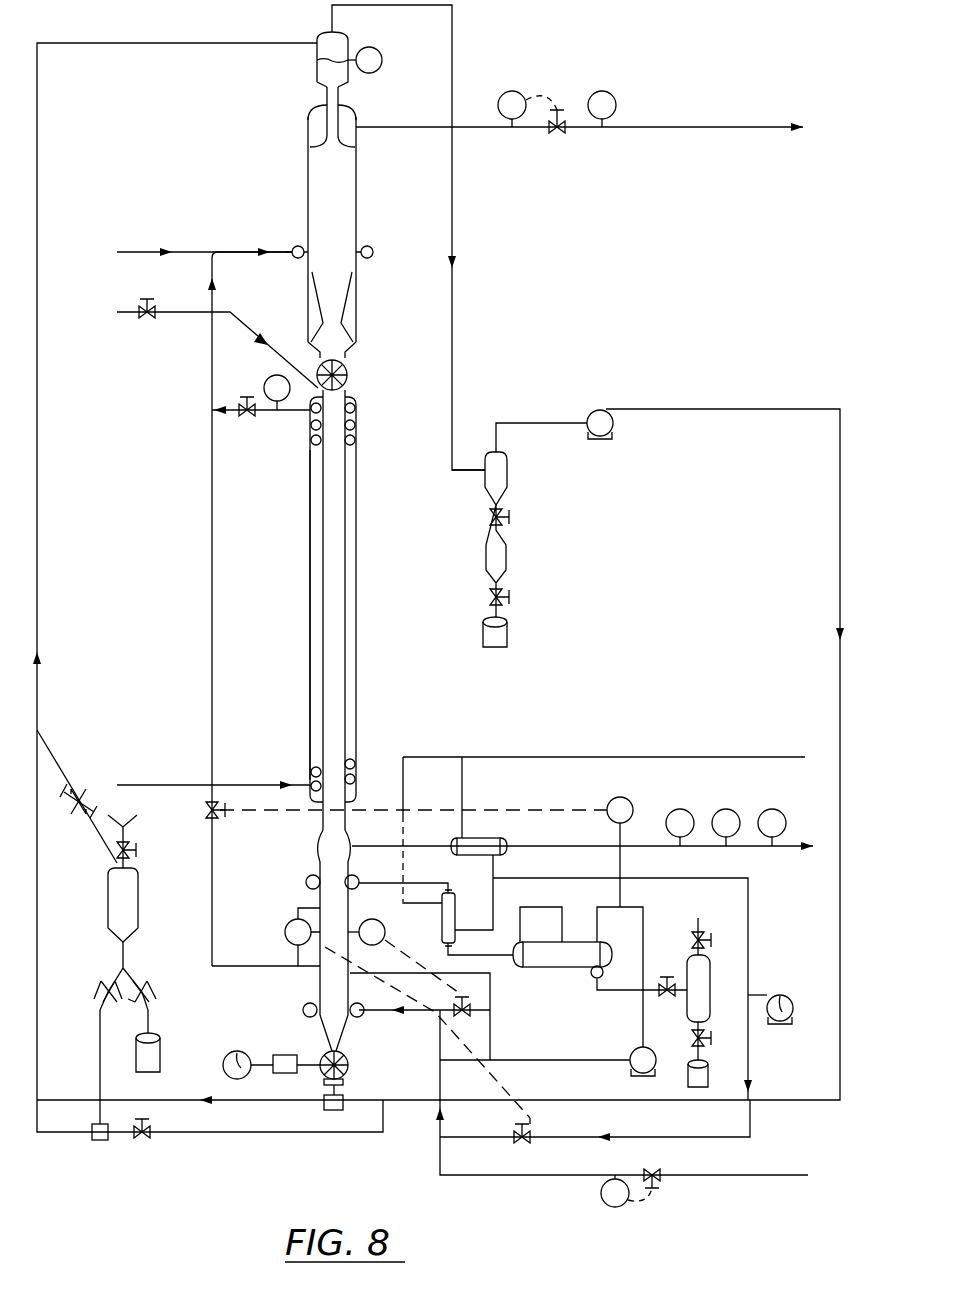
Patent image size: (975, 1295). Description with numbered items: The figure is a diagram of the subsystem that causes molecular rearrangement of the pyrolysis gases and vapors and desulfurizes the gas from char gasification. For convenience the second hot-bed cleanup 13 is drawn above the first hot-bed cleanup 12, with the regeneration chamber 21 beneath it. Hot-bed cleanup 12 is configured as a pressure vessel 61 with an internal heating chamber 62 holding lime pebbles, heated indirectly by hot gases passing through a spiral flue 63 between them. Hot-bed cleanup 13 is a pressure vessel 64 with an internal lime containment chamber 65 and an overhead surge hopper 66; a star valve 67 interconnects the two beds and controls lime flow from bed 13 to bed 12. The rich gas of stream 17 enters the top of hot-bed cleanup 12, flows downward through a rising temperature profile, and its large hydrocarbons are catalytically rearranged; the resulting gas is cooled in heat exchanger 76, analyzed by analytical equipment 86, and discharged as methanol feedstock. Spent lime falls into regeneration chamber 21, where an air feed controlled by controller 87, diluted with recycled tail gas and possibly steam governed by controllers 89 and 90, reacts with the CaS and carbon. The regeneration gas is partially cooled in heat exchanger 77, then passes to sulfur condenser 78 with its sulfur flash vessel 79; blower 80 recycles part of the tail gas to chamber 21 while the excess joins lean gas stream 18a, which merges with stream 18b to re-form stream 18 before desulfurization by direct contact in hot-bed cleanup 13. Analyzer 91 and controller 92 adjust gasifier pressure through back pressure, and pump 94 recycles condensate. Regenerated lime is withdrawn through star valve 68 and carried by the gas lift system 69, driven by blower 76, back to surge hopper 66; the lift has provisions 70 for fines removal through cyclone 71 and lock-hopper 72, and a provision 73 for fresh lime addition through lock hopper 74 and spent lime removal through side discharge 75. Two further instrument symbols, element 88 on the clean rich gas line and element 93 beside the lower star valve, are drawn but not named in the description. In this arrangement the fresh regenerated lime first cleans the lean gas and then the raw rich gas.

The first hot-bed cleanup 12 is at (341, 617).
The second hot-bed cleanup 13 is at (338, 215).
The gas duct 17 is at (186, 310).
The raw low Btu gas stream 18 is at (256, 250).
The lean gas stream 18a is at (255, 418).
The lean gas stream 18b is at (128, 236).
The regeneration chamber 21 is at (341, 925).
The pressure vessel 61 is at (357, 576).
The internal heating chamber 62 is at (340, 510).
The spiral flue 63 is at (356, 414).
The pressure vessel 64 is at (365, 231).
The internal lime containment chamber 65 is at (348, 164).
The overhead surge hopper 66 is at (347, 40).
The star valve 67 is at (348, 372).
The star valve 68 is at (348, 1060).
The gas lift system 69 is at (343, 1096).
The provisions for removal of fines 70 is at (502, 484).
The cyclone 71 is at (480, 484).
The lock-hopper 72 is at (508, 566).
The provision for addition of fresh lime 73 is at (134, 918).
The lock hopper 74 is at (108, 912).
The side discharge 75 is at (150, 1022).
The blower / heat exchanger 76 is at (592, 410).
The heat exchanger 77 is at (452, 918).
The sulfur condenser 78 is at (569, 964).
The sulfur flash vessel 79 is at (708, 978).
The blower 80 is at (646, 1056).
The analytical equipment 86 is at (733, 812).
The controller 87 is at (600, 1198).
The instrument 88 is at (628, 792).
The controller 89 is at (388, 920).
The controller 90 is at (284, 936).
The analyzer 91 is at (503, 92).
The controller 92 is at (625, 78).
The pump 93 is at (250, 1040).
The pump 94 is at (784, 998).